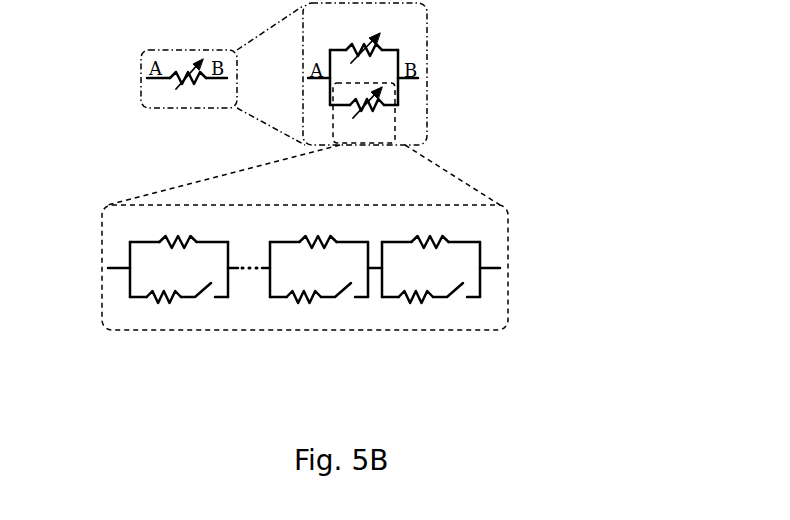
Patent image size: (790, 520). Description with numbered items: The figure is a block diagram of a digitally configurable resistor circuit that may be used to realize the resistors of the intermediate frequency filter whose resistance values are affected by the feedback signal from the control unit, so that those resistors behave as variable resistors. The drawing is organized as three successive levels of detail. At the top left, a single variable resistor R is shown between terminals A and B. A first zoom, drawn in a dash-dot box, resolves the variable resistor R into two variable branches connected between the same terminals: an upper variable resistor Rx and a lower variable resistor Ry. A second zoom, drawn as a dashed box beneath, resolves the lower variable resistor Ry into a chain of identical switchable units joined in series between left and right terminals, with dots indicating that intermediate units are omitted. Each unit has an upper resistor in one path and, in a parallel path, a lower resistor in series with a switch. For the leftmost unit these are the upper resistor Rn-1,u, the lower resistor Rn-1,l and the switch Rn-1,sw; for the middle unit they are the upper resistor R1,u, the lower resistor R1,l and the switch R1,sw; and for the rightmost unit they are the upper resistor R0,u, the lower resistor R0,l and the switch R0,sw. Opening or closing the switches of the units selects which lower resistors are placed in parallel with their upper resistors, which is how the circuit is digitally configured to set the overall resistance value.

The variable resistor R is at (187, 83).
The first variable resistor Rx is at (364, 36).
The second variable resistor Ry is at (364, 113).
The upper resistor of unit n-1 Rn-1,u is at (179, 228).
The lower resistor of unit n-1 Rn-1,l is at (156, 310).
The switch of unit n-1 Rn-1,sw is at (212, 306).
The upper resistor of unit 1 R1,u is at (319, 228).
The lower resistor of unit 1 R1,l is at (295, 310).
The switch of unit 1 R1,sw is at (346, 306).
The upper resistor of unit 0 R0,u is at (431, 228).
The lower resistor of unit 0 R0,l is at (407, 310).
The switch of unit 0 R0,sw is at (459, 306).